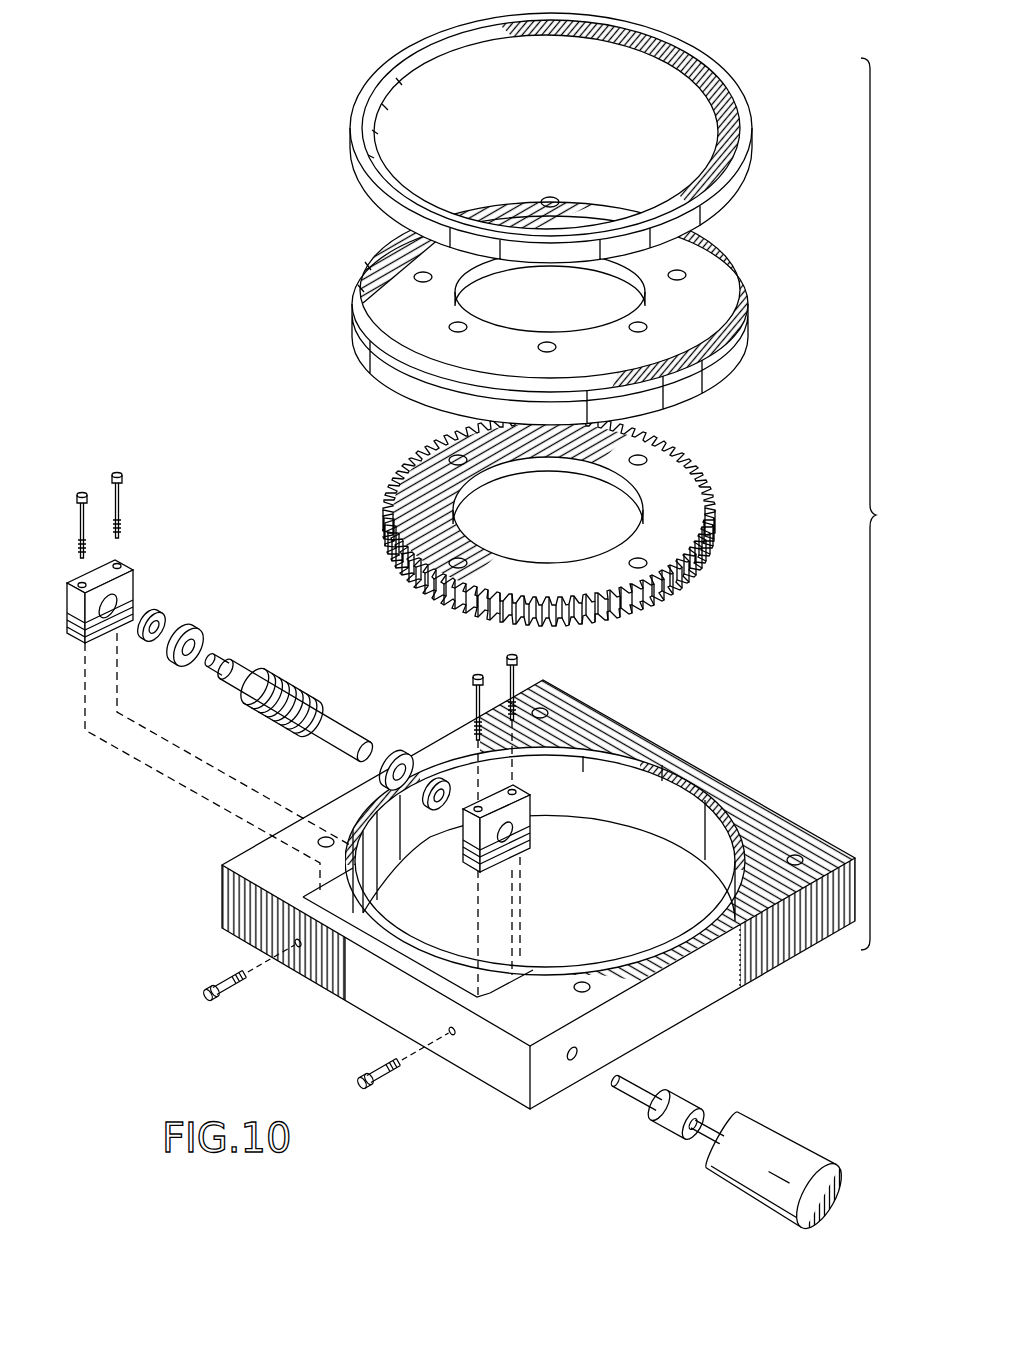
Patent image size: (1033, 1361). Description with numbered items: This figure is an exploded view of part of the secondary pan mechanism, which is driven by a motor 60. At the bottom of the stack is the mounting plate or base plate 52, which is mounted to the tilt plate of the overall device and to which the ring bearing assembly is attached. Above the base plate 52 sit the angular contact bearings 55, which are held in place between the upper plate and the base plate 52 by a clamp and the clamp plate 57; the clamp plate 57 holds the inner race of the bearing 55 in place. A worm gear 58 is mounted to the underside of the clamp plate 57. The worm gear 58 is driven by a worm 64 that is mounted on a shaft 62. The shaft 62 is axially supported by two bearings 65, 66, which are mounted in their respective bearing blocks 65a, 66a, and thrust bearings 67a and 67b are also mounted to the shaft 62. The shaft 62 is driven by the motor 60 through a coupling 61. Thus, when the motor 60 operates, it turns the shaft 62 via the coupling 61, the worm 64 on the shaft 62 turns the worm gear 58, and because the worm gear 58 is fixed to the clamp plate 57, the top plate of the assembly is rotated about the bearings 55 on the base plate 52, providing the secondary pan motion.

The base plate 52 is at (770, 832).
The angular contact bearings 55 is at (360, 106).
The clamp plate 57 is at (728, 264).
The worm gear 58 is at (420, 496).
The motor 60 is at (748, 1170).
The coupling 61 is at (680, 1100).
The shaft 62 is at (368, 748).
The worm 64 is at (285, 715).
The bearing 65 is at (435, 812).
The bearing block 65a is at (540, 832).
The bearing 66 is at (158, 613).
The bearing block 66a is at (67, 613).
The thrust bearing 67a is at (400, 756).
The thrust bearing 67b is at (200, 637).